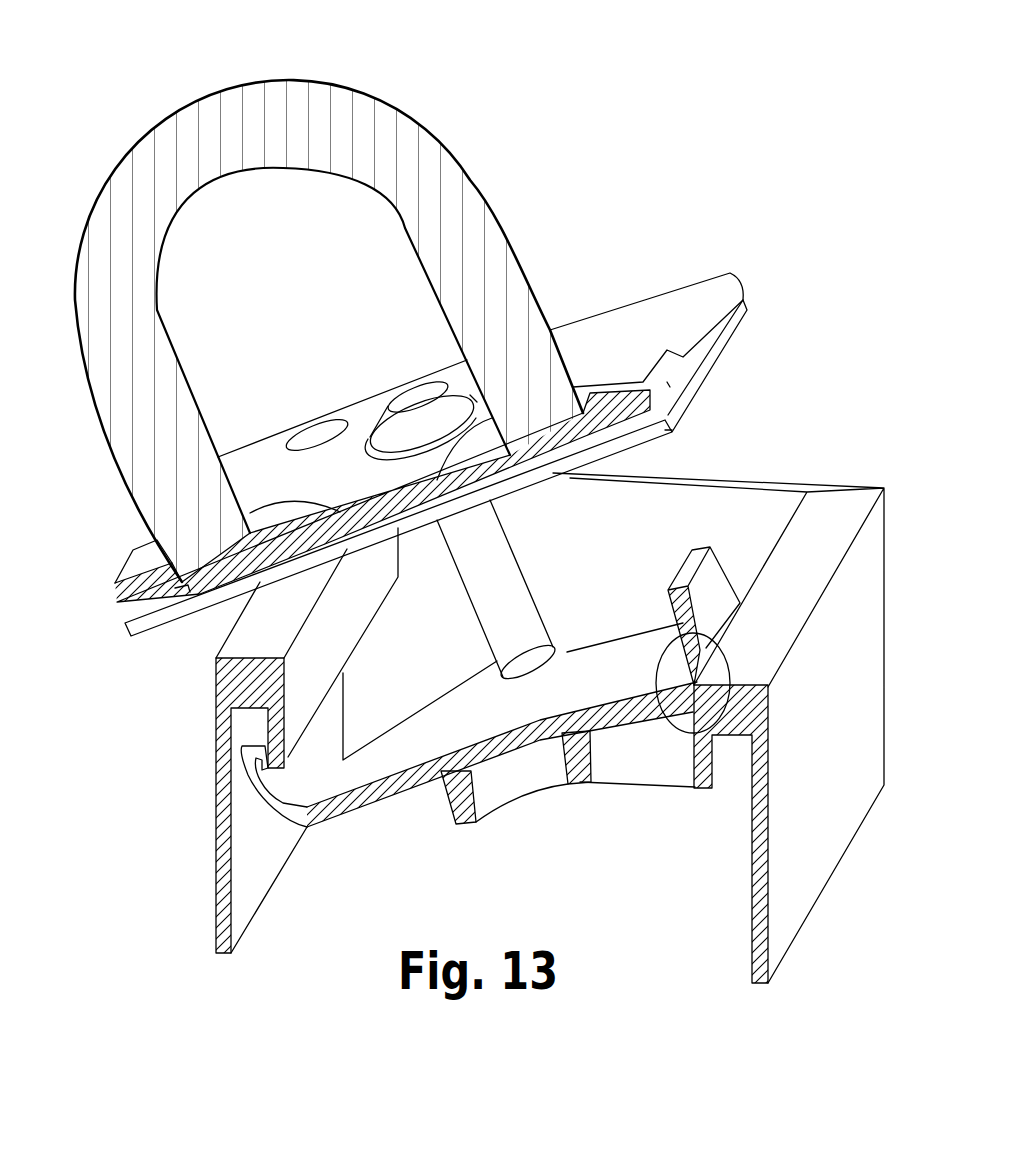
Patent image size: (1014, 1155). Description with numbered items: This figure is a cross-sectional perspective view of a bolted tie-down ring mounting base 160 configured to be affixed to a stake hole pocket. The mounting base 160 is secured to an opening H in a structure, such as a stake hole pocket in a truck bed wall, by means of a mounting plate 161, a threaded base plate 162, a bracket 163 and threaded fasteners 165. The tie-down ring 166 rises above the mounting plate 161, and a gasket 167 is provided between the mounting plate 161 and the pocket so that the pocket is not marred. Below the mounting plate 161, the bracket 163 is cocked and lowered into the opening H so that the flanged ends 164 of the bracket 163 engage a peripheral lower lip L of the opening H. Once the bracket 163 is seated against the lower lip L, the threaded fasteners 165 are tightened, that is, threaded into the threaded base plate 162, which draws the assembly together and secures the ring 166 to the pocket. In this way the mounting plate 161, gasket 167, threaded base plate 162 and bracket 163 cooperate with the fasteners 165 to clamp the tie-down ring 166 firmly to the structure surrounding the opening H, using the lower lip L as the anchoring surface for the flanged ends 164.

The bolted tie-down ring mounting base 160 is at (92, 618).
The mounting plate 161 is at (655, 310).
The threaded base plate 162 is at (463, 805).
The bracket 163 is at (380, 803).
The flanged ends 164 is at (268, 795).
The threaded fasteners 165 is at (517, 608).
The tie-down ring 166 is at (468, 208).
The gasket 167 is at (722, 338).
The opening H is at (713, 633).
The peripheral lower lip L is at (713, 757).